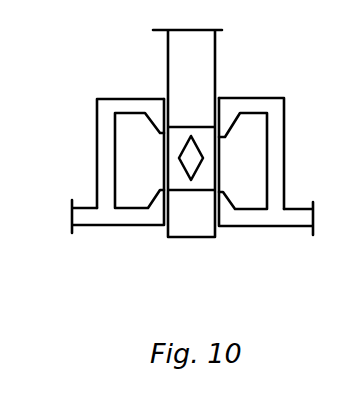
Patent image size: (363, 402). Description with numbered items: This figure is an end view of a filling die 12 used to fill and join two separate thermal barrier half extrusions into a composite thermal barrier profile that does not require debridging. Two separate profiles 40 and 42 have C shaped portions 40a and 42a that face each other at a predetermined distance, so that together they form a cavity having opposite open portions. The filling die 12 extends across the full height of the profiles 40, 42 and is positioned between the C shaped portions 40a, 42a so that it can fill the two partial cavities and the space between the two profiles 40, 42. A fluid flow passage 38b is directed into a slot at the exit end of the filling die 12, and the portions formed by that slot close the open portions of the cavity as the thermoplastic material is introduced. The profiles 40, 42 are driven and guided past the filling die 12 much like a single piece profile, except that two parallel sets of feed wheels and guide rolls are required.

The filling die 12 is at (203, 51).
The fluid flow passage 38b is at (178, 160).
The C shaped portion 40a is at (133, 102).
The profile 40 is at (83, 216).
The C shaped portion 42a is at (256, 105).
The profile 42 is at (293, 220).